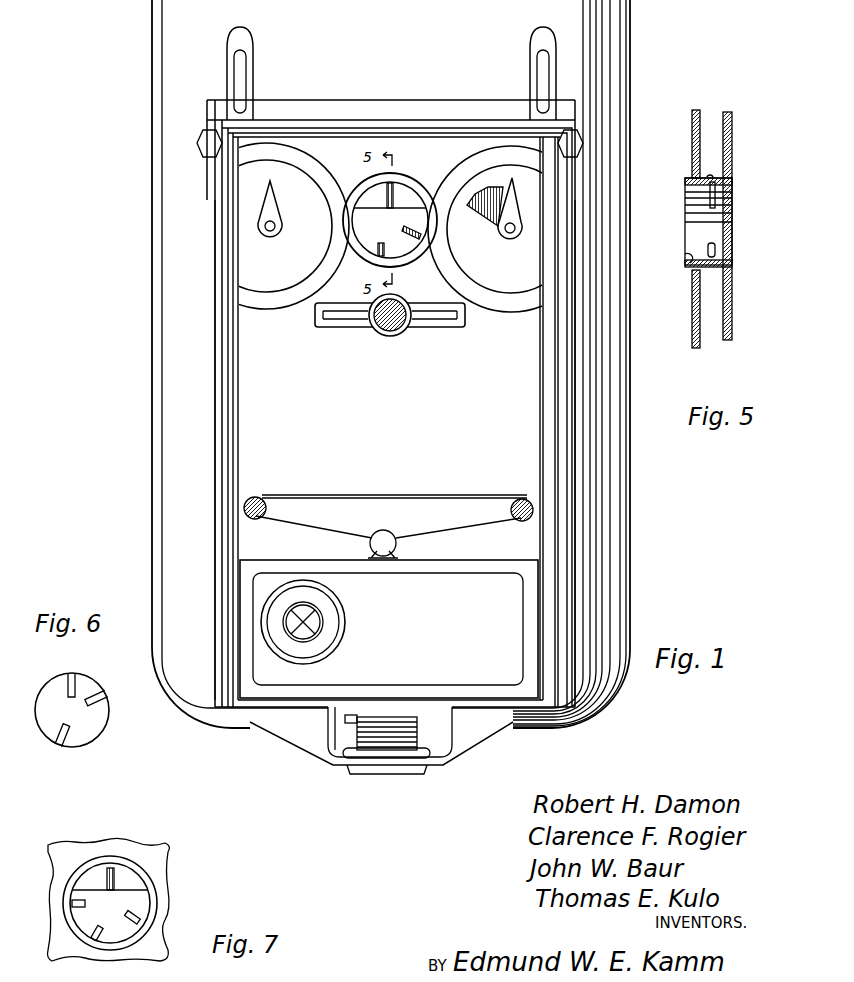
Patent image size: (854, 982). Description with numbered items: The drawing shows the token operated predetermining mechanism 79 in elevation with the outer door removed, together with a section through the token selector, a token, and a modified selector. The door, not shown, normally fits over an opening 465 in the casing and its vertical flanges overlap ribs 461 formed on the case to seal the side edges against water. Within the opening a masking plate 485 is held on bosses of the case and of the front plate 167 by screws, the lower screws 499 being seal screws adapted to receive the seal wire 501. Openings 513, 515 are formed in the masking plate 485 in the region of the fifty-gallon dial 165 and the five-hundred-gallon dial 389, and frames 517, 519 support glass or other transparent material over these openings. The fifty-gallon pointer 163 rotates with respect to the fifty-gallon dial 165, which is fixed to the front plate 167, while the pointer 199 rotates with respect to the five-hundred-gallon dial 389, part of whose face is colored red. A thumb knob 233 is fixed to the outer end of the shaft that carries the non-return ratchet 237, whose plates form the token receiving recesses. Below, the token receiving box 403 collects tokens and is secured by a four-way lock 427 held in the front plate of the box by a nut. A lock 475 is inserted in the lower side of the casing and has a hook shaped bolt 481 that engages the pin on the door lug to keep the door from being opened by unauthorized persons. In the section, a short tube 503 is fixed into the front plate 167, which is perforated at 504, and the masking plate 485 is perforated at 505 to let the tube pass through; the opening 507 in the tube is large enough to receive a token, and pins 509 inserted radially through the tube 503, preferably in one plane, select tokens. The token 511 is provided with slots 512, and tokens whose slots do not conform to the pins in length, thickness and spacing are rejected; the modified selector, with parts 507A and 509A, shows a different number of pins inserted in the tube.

In FIG. 1, the token operated predetermining mechanism 79 is at (628, 522).
In FIG. 1, the ribs 461 is at (213, 455).
In FIG. 1, the opening 465 is at (242, 418).
In FIG. 1, the masking plate 485 is at (390, 405).
In FIG. 5, the masking plate 485 is at (702, 112).
In FIG. 7, the masking plate 485 is at (157, 855).
In FIG. 1, the lower screws 499 is at (253, 497).
In FIG. 1, the seal wire 501 is at (370, 495).
In FIG. 1, the token receiving box 403 is at (450, 613).
In FIG. 1, the four-way lock 427 is at (332, 630).
In FIG. 1, the hook shaped bolt 481 is at (403, 717).
In FIG. 1, the lock 475 is at (368, 775).
In FIG. 1, the fifty-gallon pointer 163 is at (274, 207).
In FIG. 1, the fifty-gallon dial 165 is at (288, 261).
In FIG. 1, the opening 507 is at (382, 178).
In FIG. 5, the opening 507 is at (689, 262).
In FIG. 1, the non-return ratchet 237 is at (397, 213).
In FIG. 1, the opening 513 is at (470, 256).
In FIG. 1, the pointer 199 is at (476, 279).
In FIG. 1, the opening 515 is at (287, 285).
In FIG. 1, the frame 519 is at (260, 304).
In FIG. 1, the thumb knob 233 is at (433, 324).
In FIG. 1, the 500-gallon dial 389 is at (488, 292).
In FIG. 1, the frame 517 is at (480, 302).
In FIG. 5, the front plate 167 is at (732, 148).
In FIG. 5, the perforation 504 is at (732, 183).
In FIG. 5, the pins 509 is at (733, 201).
In FIG. 5, the short tube 503 is at (698, 235).
In FIG. 5, the perforation 505 is at (693, 270).
In FIG. 6, the slots 512 is at (72, 673).
In FIG. 6, the token 511 is at (97, 704).
In FIG. 7, the pin 509A is at (114, 872).
In FIG. 7, the knob 507A is at (150, 903).